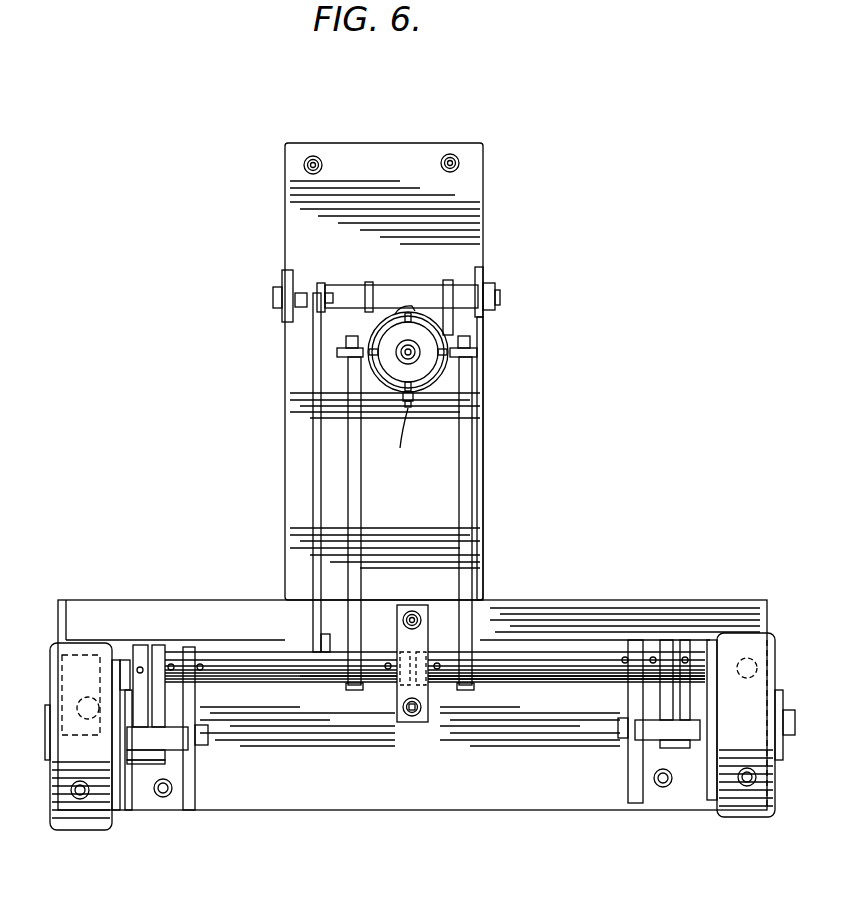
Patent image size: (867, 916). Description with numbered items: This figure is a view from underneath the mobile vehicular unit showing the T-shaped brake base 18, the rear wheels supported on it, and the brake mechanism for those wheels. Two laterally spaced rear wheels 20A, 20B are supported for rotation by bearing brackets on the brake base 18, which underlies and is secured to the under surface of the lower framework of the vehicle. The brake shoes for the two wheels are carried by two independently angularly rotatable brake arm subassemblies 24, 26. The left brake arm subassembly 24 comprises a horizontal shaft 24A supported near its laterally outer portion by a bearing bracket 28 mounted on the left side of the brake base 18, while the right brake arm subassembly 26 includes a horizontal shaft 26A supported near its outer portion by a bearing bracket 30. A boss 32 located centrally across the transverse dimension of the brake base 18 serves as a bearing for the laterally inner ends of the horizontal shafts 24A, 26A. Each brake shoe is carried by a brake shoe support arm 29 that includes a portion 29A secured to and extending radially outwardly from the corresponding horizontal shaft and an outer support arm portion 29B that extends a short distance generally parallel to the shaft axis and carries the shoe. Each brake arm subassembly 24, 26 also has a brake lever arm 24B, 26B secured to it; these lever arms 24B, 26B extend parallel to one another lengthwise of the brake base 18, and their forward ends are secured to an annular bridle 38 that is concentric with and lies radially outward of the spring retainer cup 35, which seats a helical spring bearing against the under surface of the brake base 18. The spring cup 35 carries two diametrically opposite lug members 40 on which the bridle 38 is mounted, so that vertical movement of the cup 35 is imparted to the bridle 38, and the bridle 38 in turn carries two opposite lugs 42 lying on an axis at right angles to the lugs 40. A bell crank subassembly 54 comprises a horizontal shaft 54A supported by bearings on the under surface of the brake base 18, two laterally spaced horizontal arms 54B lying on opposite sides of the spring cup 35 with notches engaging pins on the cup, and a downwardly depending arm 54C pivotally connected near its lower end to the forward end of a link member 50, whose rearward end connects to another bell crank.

The brake base 18 is at (399, 160).
The bell crank subassembly 54 is at (352, 287).
The horizontal shaft 54A is at (400, 305).
The horizontal arm 54B is at (366, 298).
The downwardly depending arm 54C is at (322, 300).
The lug member 40 is at (394, 314).
The spring retainer cup 35 is at (420, 348).
The lug 42 is at (337, 352).
The annular bridle 38 is at (412, 388).
The link member 50 is at (313, 418).
The brake lever arm 24B is at (356, 445).
The brake lever arm 26B is at (466, 485).
The brake shoe support arm 29 is at (158, 640).
The support arm portion 29A is at (160, 668).
The rear wheel 20B is at (758, 640).
The brake arm subassembly 26 is at (548, 655).
The brake arm subassembly 24 is at (297, 685).
The horizontal shaft 24A is at (336, 673).
The boss 32 is at (412, 722).
The horizontal shaft 26A is at (513, 663).
The bearing bracket 28 is at (196, 775).
The support arm portion 29B is at (143, 757).
The bearing bracket 30 is at (640, 800).
The rear wheel 20A is at (55, 800).